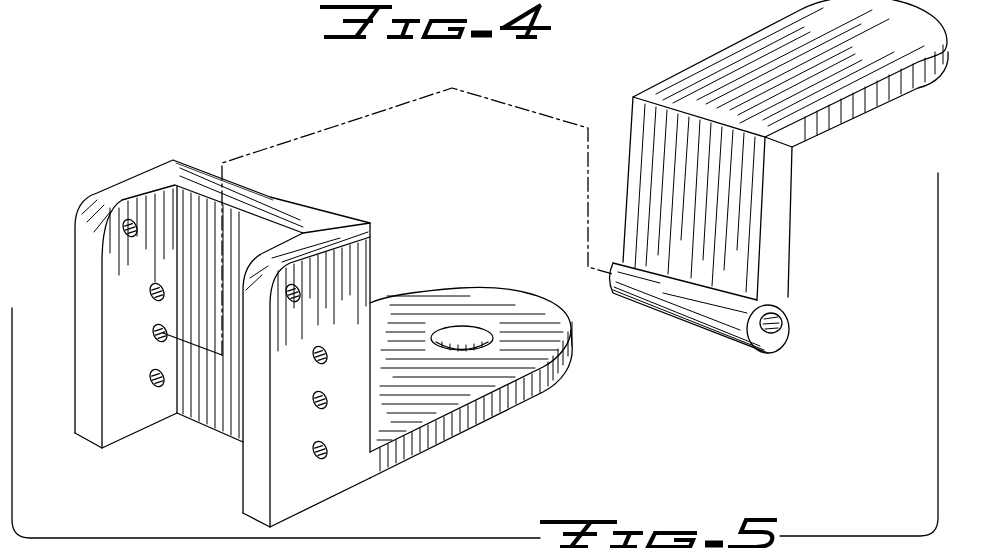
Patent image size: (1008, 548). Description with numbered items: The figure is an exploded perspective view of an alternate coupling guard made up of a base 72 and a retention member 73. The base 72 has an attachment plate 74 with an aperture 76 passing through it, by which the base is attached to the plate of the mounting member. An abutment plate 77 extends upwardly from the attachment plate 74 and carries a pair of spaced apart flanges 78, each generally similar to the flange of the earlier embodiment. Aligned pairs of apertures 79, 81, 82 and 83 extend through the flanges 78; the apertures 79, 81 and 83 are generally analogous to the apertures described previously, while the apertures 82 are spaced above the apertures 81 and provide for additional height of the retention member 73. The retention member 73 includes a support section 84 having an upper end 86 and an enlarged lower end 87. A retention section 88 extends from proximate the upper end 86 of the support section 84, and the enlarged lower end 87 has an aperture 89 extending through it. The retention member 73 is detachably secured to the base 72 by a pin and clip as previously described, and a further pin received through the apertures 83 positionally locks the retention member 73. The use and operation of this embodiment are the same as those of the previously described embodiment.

The base 72 is at (471, 365).
The retention member 73 is at (779, 178).
The attachment plate 74 is at (437, 287).
The aperture 76 is at (466, 336).
The abutment plate 77 is at (297, 205).
The flanges 78 is at (80, 213).
The apertures 79 is at (163, 387).
The apertures 81 is at (163, 342).
The apertures 82 is at (162, 301).
The apertures 83 is at (133, 238).
The support section 84 is at (792, 238).
The upper end 86 is at (680, 120).
The lower end 87 is at (706, 330).
The retention section 88 is at (780, 23).
The aperture 89 is at (781, 330).